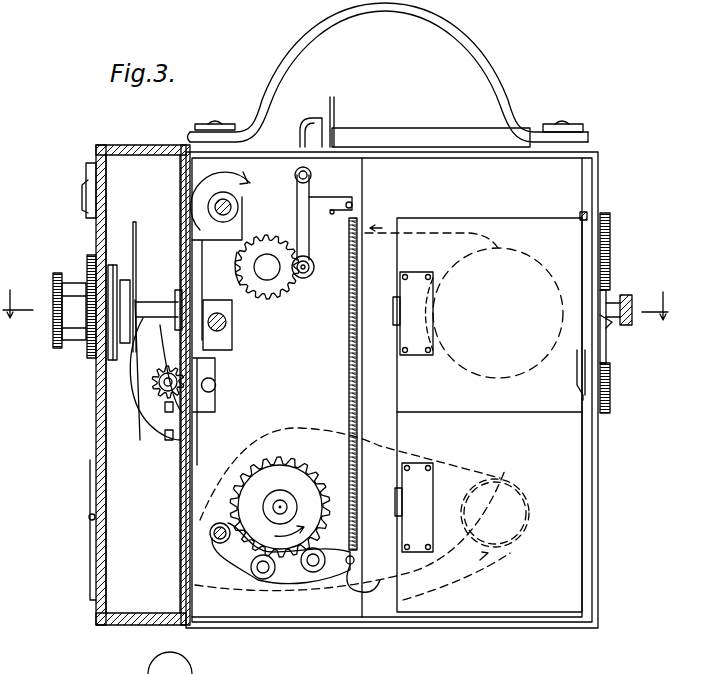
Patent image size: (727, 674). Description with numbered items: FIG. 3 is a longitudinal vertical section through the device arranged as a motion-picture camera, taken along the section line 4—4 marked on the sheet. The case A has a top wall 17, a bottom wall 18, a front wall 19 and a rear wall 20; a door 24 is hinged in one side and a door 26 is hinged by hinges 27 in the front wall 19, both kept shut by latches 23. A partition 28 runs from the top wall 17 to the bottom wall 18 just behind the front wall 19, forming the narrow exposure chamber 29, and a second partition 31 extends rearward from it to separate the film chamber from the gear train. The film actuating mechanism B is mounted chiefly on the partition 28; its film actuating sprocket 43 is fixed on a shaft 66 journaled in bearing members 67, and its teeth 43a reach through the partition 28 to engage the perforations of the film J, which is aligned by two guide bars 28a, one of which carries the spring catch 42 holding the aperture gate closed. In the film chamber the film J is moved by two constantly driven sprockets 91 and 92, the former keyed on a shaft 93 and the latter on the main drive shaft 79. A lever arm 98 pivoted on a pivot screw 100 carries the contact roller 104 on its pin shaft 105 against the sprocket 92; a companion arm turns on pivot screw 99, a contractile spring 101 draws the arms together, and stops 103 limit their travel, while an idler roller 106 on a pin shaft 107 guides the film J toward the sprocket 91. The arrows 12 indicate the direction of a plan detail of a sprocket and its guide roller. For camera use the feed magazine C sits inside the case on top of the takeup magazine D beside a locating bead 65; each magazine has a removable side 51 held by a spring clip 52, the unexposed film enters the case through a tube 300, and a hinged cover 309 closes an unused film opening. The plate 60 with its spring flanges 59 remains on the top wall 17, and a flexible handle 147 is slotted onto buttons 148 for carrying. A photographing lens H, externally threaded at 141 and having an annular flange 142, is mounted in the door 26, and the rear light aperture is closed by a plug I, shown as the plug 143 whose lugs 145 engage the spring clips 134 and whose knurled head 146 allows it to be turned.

The section line 4 is at (339, 303).
The direction arrows 12 is at (228, 232).
The top wall 17 is at (148, 152).
The bottom wall 18 is at (138, 620).
The front wall 19 is at (97, 592).
The rear wall 20 is at (613, 563).
The latches 23 is at (90, 200).
The door 24 is at (455, 178).
The door 26 is at (98, 411).
The hinges 27 is at (88, 516).
The partition 28 is at (182, 553).
The guide bars 28a is at (200, 597).
The exposure chamber 29 is at (84, 445).
The partition 31 is at (312, 376).
The spring catch 42 is at (203, 419).
The film actuating sprocket 43 is at (160, 435).
The sprocket teeth 43a is at (150, 400).
The removable side 51 is at (489, 415).
The spring clip 52 is at (413, 412).
The spring flanges 59 is at (387, 138).
The plate 60 is at (336, 106).
The bead 65 is at (585, 217).
The shaft 66 is at (168, 378).
The bearing members 67 is at (168, 445).
The main drive shaft 79 is at (276, 501).
The sprocket 91 is at (258, 280).
The sprocket 92 is at (290, 478).
The shaft 93 is at (290, 283).
The lever arm 98 is at (302, 575).
The pivot screw 99 is at (311, 176).
The pivot screw 100 is at (218, 522).
The contractile spiral spring 101 is at (356, 450).
The stops 103 is at (352, 198).
The contact roller 104 is at (262, 580).
The pin shaft 105 is at (242, 580).
The idler roller 106 is at (238, 208).
The pin shaft 107 is at (231, 194).
The spring clips 134 is at (606, 352).
The screw threads 141 is at (100, 300).
The annular flange 142 is at (87, 257).
The plug 143 is at (607, 255).
The lugs 145 is at (612, 322).
The button 146 is at (630, 300).
The flexible handle 147 is at (505, 88).
The buttons 148 is at (205, 123).
The tube 300 is at (315, 117).
The cover 309 is at (258, 140).
The case A is at (92, 480).
The film actuating mechanism B is at (160, 445).
The feed film magazine C is at (550, 390).
The takeup film magazine D is at (565, 550).
The photographing lens H is at (77, 345).
The plug I is at (607, 378).
The film J is at (338, 240).